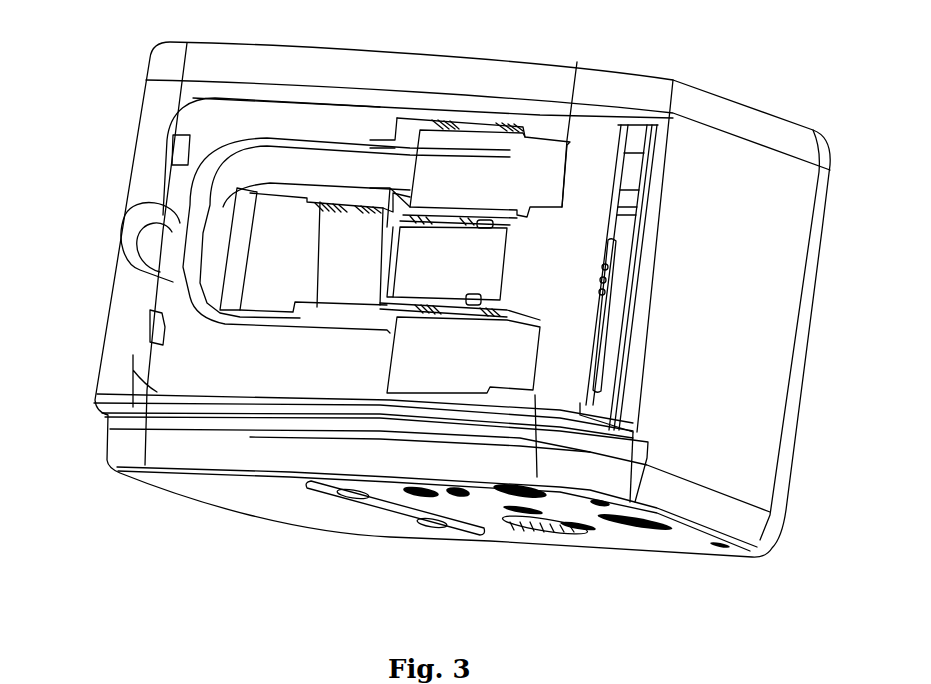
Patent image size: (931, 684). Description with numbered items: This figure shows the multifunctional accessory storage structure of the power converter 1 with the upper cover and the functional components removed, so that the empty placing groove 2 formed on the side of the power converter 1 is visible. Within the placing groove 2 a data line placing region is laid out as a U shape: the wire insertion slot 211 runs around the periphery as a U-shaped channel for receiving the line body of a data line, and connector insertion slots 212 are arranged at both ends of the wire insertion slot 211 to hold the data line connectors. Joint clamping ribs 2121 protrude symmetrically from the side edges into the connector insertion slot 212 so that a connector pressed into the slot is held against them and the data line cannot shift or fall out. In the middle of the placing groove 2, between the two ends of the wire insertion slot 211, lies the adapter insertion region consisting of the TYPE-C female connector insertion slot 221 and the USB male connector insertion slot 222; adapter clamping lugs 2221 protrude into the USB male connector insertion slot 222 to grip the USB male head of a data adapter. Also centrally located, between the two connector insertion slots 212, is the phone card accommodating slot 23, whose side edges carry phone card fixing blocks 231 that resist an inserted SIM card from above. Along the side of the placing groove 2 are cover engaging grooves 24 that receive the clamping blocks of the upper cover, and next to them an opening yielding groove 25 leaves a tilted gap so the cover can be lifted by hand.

The power converter 1 is at (748, 325).
The placing groove 2 is at (220, 110).
The wire insertion slot 211 is at (350, 158).
The connector insertion slot 212 is at (482, 157).
The joint clamping rib 2121 is at (505, 125).
The TYPE-C female connector insertion slot 221 is at (273, 290).
The USB male connector insertion slot 222 is at (333, 285).
The adapter clamping lug 2221 is at (362, 212).
The phone card accommodating slot 23 is at (433, 280).
The phone card fixing block 231 is at (473, 305).
The cover engaging groove 24 is at (172, 146).
The opening yielding groove 25 is at (137, 253).